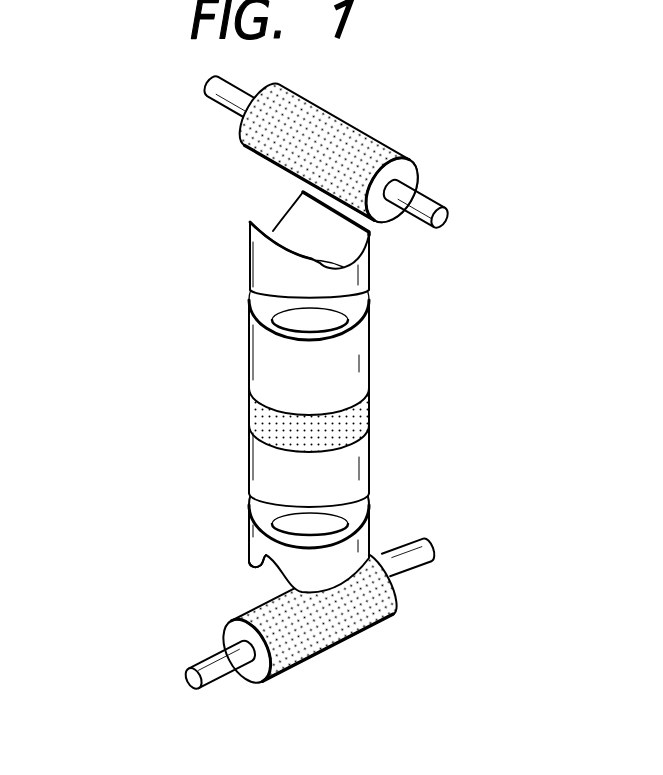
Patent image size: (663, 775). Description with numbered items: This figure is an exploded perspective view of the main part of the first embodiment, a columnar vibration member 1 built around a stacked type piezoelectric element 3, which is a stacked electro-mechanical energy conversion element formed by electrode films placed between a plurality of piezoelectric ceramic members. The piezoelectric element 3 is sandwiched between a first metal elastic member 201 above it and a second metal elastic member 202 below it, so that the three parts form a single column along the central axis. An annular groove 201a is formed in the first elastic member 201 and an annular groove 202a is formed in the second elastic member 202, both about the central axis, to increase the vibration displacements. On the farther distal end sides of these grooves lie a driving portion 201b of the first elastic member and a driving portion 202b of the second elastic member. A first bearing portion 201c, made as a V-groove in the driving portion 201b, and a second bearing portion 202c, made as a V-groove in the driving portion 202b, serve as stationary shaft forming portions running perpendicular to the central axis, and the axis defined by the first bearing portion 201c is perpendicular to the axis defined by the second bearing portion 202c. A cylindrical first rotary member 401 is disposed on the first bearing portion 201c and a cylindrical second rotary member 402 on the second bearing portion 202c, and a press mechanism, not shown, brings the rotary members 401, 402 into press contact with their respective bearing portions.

The columnar vibration member 1 is at (448, 468).
The stacked type piezoelectric element 3 is at (360, 415).
The first metal elastic member 201 is at (360, 343).
The annular groove 201a is at (270, 324).
The driving portion 201b is at (272, 277).
The first bearing portion 201c is at (308, 220).
The second metal elastic member 202 is at (360, 460).
The annular groove 202a is at (257, 517).
The driving portion 202b is at (253, 545).
The second bearing portion 202c is at (260, 565).
The first rotary member 401 is at (358, 132).
The second rotary member 402 is at (352, 627).